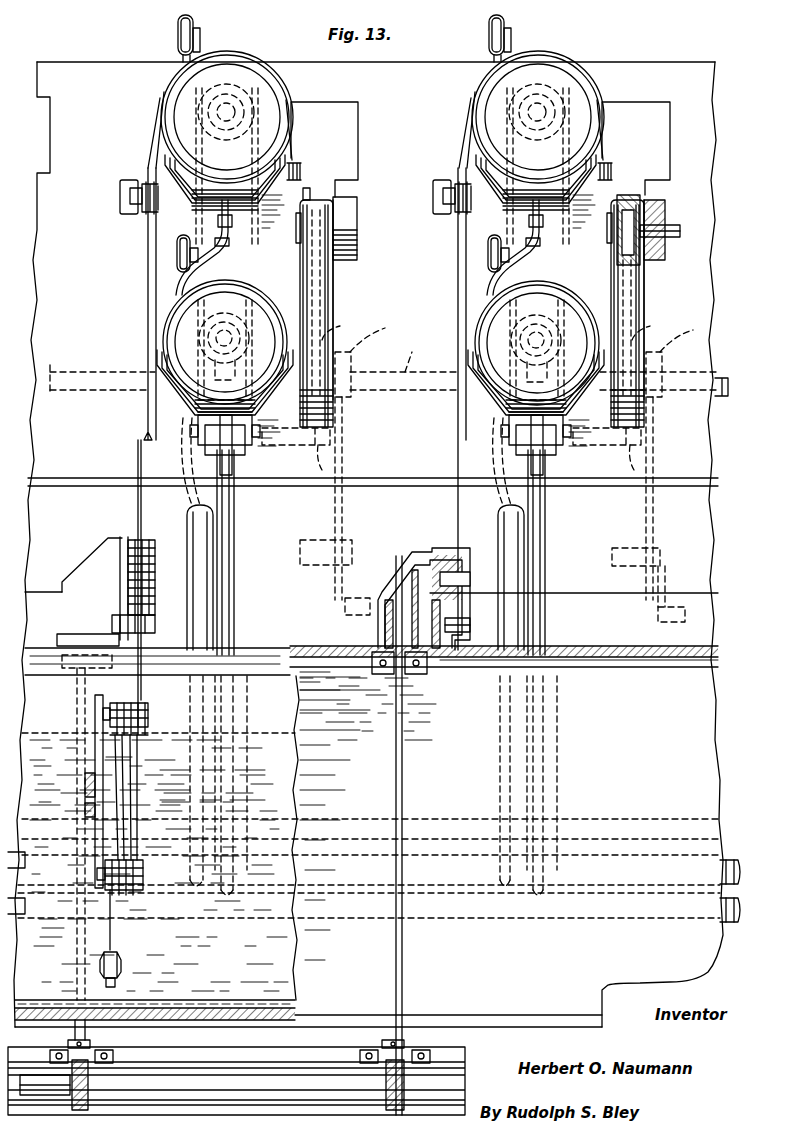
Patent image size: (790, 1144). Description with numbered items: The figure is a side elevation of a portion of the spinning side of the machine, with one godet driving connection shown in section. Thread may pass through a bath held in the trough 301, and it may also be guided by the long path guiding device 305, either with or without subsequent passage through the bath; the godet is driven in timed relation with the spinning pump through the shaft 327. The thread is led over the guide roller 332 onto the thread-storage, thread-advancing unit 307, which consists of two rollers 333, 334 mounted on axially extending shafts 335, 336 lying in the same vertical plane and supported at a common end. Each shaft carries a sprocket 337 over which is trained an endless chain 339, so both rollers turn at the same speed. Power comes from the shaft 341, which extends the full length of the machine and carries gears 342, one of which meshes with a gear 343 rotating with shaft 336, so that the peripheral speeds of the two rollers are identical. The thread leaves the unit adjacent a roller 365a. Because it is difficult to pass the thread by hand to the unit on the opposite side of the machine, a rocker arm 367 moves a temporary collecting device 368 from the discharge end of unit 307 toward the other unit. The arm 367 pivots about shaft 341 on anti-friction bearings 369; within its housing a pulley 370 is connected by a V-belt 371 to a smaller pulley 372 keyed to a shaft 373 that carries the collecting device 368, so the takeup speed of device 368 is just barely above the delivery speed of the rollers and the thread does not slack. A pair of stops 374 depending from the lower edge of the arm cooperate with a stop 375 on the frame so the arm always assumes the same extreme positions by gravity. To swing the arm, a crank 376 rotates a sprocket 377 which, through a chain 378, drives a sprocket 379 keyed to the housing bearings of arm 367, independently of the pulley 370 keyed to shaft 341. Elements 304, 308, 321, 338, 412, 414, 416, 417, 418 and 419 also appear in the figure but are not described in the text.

The trough 301 is at (708, 770).
The weight 304 is at (122, 970).
The long path guiding device 305 is at (142, 774).
The thread-storage, thread-advancing unit 307 is at (164, 98).
The rod housing 308 is at (335, 308).
The bracket 321 is at (78, 562).
The shaft 327 is at (458, 1085).
The guide roller 332 is at (147, 190).
The roller 333 is at (236, 52).
The roller 334 is at (592, 292).
The shaft 335 is at (228, 105).
The shaft 336 is at (368, 350).
The sprocket 337 is at (238, 302).
The drum hub 338 is at (382, 166).
The endless chain 339 is at (258, 245).
The shaft 341 is at (413, 354).
The gears 342 is at (185, 440).
The gear 343 is at (381, 362).
The roller 365a is at (303, 170).
The rocker arm 367 is at (334, 290).
The temporary collecting device 368 is at (357, 215).
The anti-friction bearings 369 is at (351, 358).
The pulley 370 is at (501, 327).
The V-belt 371 is at (296, 272).
The pulley 372 is at (328, 190).
The shaft 373 is at (680, 235).
The stops 374 is at (474, 463).
The stop 375 is at (296, 445).
The crank 376 is at (345, 600).
The sprocket 377 is at (338, 562).
The chain 378 is at (345, 455).
The sprocket 379 is at (536, 333).
The hanger 412 is at (178, 36).
The hanger 414 is at (177, 255).
The drum cradle 416 is at (190, 200).
The lower drum cradle 417 is at (162, 395).
The fitting 418 is at (732, 858).
The fitting 419 is at (728, 924).